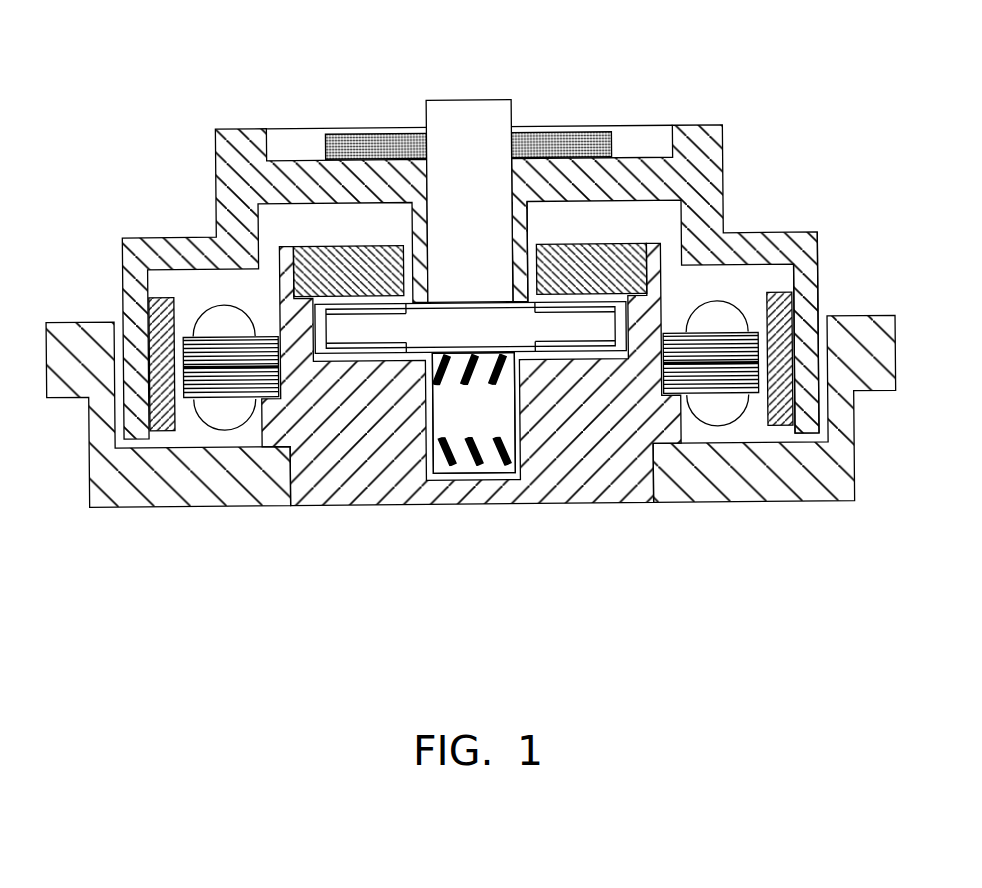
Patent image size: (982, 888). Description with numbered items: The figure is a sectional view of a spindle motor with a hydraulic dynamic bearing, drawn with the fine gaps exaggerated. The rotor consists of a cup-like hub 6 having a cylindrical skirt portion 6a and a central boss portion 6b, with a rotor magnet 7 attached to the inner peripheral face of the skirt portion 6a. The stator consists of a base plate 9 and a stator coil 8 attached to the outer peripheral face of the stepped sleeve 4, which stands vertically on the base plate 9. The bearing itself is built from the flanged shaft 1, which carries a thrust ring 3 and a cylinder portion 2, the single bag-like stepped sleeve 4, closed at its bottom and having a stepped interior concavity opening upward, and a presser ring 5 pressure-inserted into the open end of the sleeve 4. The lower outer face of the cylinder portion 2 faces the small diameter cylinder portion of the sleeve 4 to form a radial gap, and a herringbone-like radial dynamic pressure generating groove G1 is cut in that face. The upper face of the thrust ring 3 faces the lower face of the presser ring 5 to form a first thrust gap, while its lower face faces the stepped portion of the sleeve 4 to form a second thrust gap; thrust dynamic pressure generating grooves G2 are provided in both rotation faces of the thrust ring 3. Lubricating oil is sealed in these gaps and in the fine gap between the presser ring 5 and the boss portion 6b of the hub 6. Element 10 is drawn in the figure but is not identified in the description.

The flanged shaft 1 is at (470, 118).
The cylinder portion 2 is at (446, 414).
The thrust ring 3 is at (610, 322).
The stepped sleeve 4 is at (311, 469).
The presser ring 5 is at (388, 261).
The cup-like hub 6 is at (706, 200).
The cylindrical skirt portion 6a is at (808, 303).
The boss portion 6b is at (524, 238).
The rotor magnet 7 is at (165, 428).
The stator coil 8 is at (225, 411).
The base plate 9 is at (769, 485).
The magnet 10 is at (542, 141).
The radial dynamic pressure generating groove G1 is at (485, 460).
The thrust dynamic pressure generating groove G2 is at (352, 306).